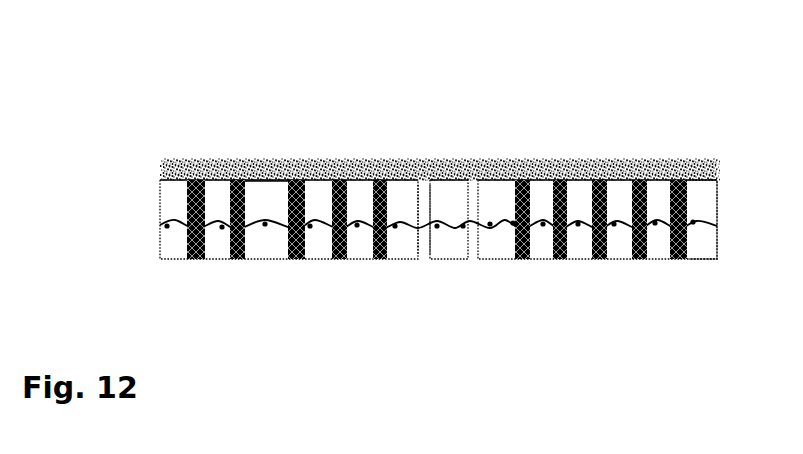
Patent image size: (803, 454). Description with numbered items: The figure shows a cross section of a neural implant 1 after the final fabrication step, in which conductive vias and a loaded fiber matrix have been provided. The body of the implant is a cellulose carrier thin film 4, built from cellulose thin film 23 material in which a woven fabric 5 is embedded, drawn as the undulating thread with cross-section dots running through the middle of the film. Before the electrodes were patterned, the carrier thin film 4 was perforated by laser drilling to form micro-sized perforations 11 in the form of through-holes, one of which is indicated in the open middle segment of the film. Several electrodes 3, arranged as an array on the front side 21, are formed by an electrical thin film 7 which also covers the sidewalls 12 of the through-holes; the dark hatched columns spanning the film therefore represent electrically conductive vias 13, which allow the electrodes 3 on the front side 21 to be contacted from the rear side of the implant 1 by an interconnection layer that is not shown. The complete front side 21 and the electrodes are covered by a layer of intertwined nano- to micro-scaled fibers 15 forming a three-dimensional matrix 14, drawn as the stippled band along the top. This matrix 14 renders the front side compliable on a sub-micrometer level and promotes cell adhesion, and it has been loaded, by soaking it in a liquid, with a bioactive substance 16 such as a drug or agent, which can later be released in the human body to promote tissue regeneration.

The neural implant 1 is at (114, 139).
The electrodes 3 is at (240, 180).
The carrier thin film 4 is at (699, 193).
The woven fabric 5 is at (167, 232).
The electrical thin film 7 is at (264, 186).
The micro-sized perforations 11 is at (423, 203).
The sidewalls 12 is at (694, 247).
The electrically conductive vias 13 is at (190, 180).
The 3D-matrix 14 is at (673, 170).
The fibers 15 is at (607, 170).
The bioactive substance 16 is at (585, 170).
The front side 21 is at (380, 142).
The cellulose thin film 23 is at (172, 201).